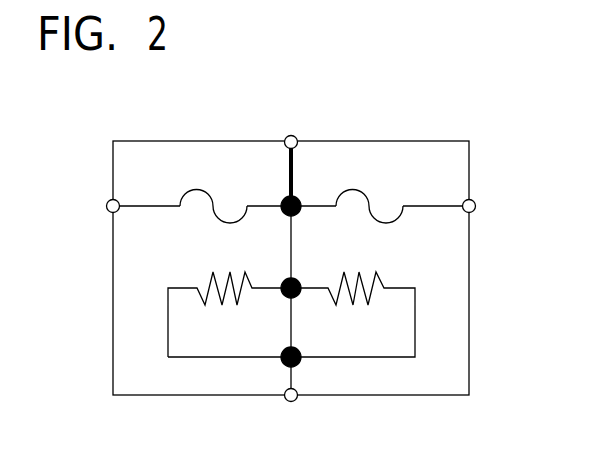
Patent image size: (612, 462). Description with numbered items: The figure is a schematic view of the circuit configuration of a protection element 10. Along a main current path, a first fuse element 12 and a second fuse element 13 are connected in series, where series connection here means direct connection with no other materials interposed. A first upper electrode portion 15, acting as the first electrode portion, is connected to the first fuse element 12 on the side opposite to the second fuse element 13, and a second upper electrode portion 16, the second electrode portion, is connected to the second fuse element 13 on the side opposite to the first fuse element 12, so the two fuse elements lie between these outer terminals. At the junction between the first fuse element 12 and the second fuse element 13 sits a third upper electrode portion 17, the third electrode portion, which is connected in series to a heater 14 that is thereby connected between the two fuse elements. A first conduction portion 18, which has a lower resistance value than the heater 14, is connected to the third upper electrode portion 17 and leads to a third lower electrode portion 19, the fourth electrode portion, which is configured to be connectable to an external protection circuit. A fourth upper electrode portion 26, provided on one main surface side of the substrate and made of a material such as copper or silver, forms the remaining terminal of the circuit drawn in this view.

The protection element 10 is at (487, 119).
The first fuse element 12 is at (200, 189).
The second fuse element 13 is at (352, 189).
The heater 14 is at (163, 282).
The first upper electrode portion 15 is at (106, 206).
The second upper electrode portion 16 is at (476, 206).
The third upper electrode portion 17 is at (300, 198).
The first conduction portion 18 is at (289, 173).
The third lower electrode portion 19 is at (296, 135).
The fourth upper electrode portion 26 is at (293, 401).